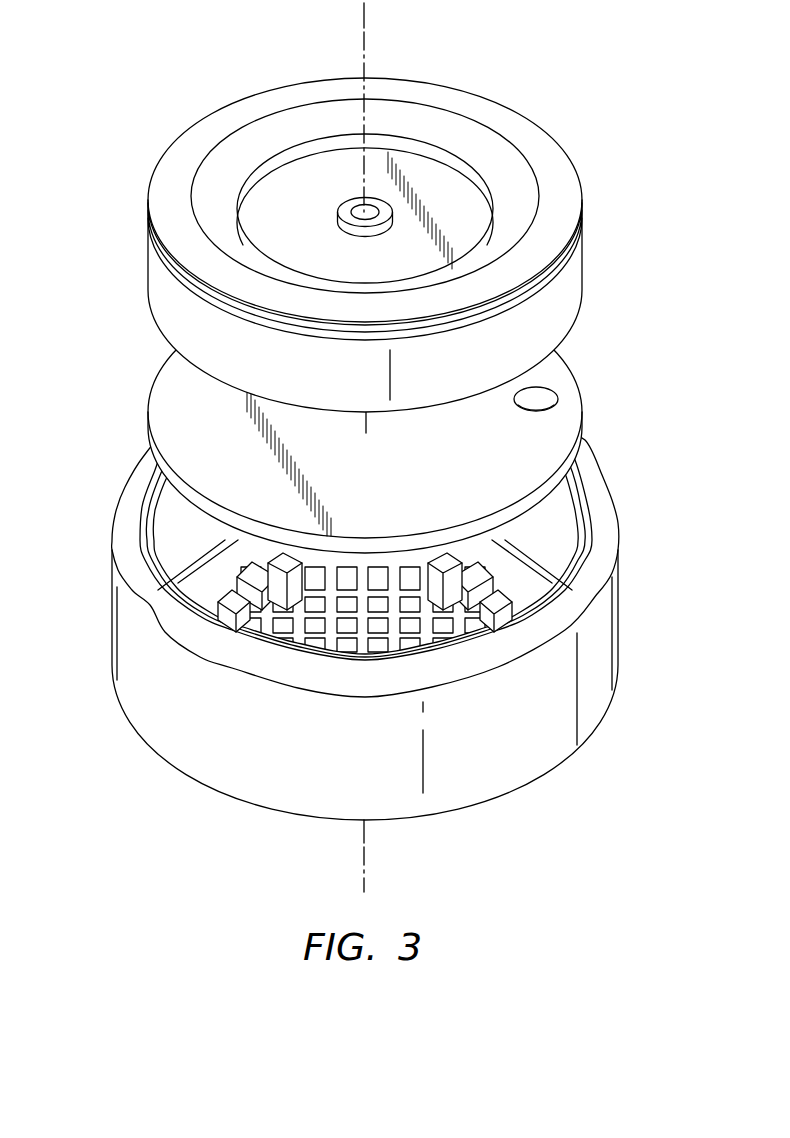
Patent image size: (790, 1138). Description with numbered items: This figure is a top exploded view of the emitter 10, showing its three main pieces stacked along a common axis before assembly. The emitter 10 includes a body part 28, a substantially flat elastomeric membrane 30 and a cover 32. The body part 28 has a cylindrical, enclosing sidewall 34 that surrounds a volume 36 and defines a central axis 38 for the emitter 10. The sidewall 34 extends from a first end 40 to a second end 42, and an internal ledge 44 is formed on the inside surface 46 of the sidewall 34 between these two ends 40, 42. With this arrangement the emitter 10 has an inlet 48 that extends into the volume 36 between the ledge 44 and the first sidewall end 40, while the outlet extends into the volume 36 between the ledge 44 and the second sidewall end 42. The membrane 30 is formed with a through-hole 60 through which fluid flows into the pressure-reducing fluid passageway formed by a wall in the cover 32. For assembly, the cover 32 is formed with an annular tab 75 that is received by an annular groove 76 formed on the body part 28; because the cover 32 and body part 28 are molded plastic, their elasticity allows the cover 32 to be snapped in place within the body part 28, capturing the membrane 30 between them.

The emitter 10 is at (500, 89).
The body part 28 is at (195, 753).
The membrane 30 is at (183, 402).
The cover 32 is at (172, 183).
The sidewall 34 is at (118, 640).
The volume 36 is at (566, 545).
The central axis 38 is at (364, 29).
The first end 40 is at (533, 779).
The second end 42 is at (580, 480).
The internal ledge 44 is at (547, 563).
The inside surface 46 is at (163, 551).
The inlet 48 is at (445, 628).
The through-hole 60 is at (543, 398).
The annular tab 75 is at (585, 228).
The annular groove 76 is at (162, 529).